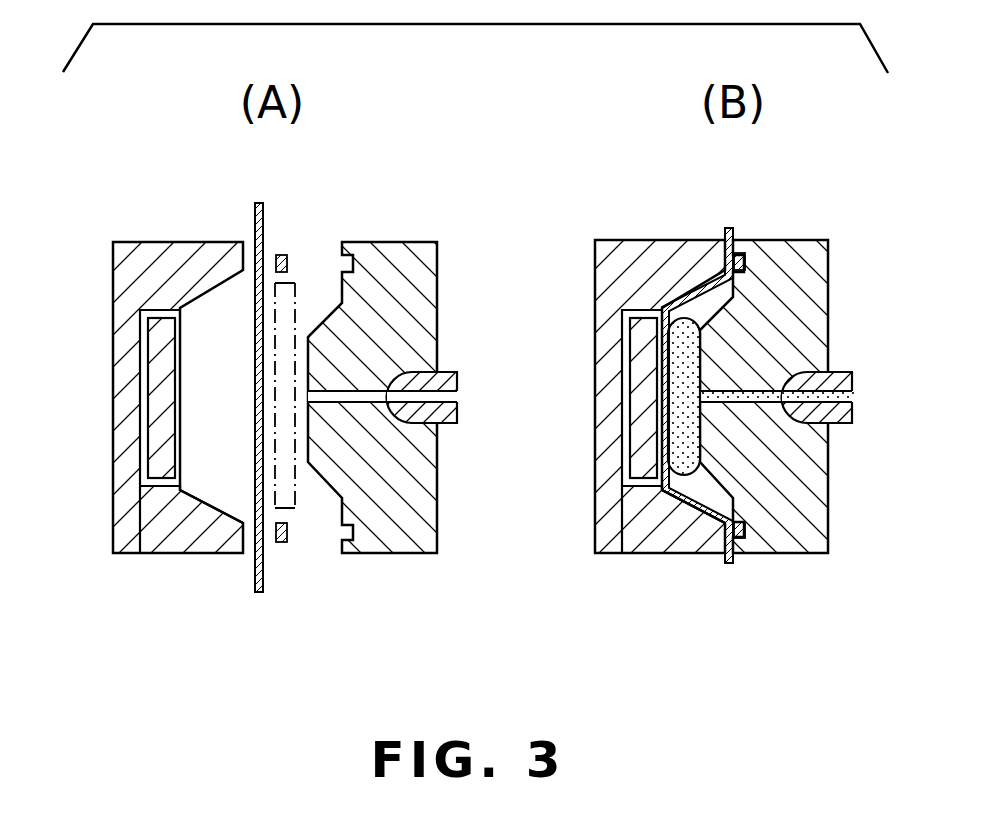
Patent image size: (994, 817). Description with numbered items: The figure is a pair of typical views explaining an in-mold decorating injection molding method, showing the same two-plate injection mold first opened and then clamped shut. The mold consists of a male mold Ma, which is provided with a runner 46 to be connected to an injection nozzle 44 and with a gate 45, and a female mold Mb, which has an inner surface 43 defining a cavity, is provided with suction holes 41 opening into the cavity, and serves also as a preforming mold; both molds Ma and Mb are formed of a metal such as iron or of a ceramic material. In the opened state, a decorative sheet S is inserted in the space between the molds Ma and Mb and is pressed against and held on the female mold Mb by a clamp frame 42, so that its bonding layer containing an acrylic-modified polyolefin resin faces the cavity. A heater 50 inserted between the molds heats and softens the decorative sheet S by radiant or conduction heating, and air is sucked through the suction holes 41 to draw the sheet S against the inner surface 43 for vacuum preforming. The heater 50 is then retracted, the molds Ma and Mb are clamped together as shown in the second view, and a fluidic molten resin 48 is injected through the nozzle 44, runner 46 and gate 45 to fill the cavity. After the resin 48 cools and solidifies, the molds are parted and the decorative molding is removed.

The decorative sheet S is at (255, 223).
The suction holes 41 is at (182, 479).
The clamp frame 42 is at (287, 258).
The inner surface 43 is at (182, 358).
The injection nozzle 44 is at (452, 381).
The gate 45 is at (312, 397).
The runner 46 is at (356, 396).
The molten resin 48 is at (692, 447).
The heater 50 is at (290, 500).
The male mold Ma is at (383, 545).
The female mold Mb is at (200, 548).